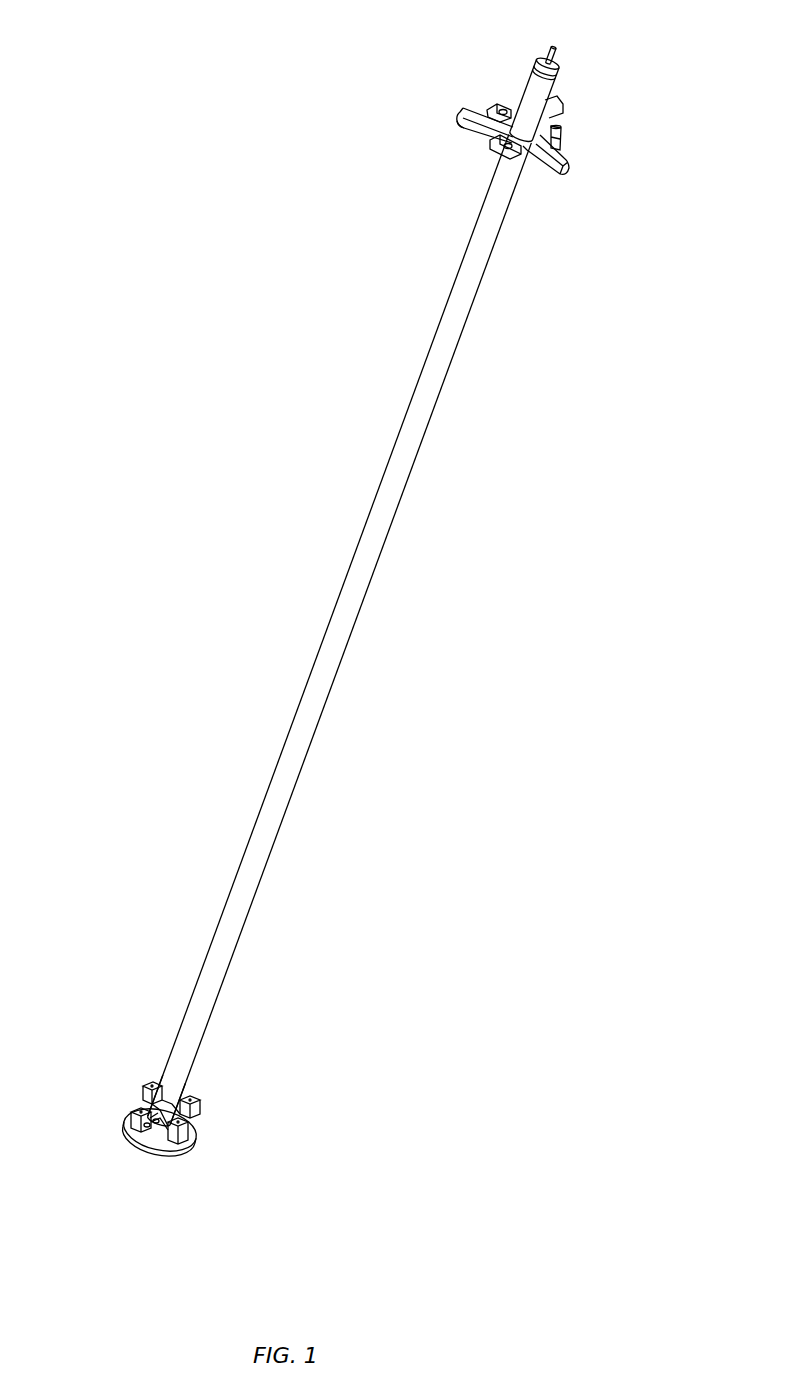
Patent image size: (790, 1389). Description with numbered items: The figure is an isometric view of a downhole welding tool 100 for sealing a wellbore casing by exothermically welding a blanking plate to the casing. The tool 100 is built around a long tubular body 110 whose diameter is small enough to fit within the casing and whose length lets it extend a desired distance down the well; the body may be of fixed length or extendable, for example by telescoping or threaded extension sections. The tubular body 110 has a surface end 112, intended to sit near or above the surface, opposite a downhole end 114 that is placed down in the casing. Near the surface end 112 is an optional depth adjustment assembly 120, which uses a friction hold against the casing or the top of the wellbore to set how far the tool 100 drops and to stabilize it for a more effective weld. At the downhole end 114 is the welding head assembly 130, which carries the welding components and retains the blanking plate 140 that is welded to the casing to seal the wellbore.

The downhole welding tool 100 is at (503, 659).
The tubular body 110 is at (313, 667).
The surface end 112 is at (577, 77).
The downhole end 114 is at (147, 1030).
The depth adjustment assembly 120 is at (447, 122).
The welding head assembly 130 is at (212, 1117).
The blanking plate 140 is at (158, 1157).